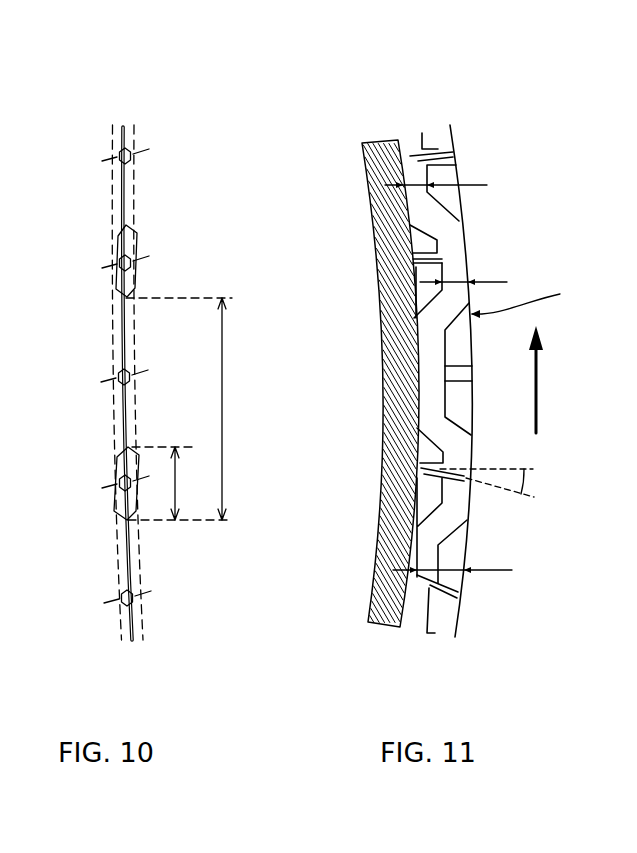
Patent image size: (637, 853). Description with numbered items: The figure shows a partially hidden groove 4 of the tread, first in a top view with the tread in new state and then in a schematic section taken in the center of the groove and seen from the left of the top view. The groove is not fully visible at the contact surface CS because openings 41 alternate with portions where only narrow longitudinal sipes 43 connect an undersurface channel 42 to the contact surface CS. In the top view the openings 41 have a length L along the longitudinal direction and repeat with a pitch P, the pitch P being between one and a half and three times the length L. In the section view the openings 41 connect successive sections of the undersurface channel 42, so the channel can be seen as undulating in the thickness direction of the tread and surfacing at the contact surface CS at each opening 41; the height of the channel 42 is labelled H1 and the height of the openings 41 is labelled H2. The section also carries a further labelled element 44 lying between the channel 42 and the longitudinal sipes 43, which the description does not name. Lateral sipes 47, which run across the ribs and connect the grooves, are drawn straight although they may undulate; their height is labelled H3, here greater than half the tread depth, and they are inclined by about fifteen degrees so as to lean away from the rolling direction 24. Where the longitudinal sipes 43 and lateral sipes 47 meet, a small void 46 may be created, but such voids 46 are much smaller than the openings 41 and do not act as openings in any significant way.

In FIG. 10, the partially hidden groove 4 is at (129, 90).
In FIG. 11, the rolling direction 24 is at (562, 383).
In FIG. 10, the opening 41 is at (112, 267).
In FIG. 11, the opening 41 is at (453, 246).
In FIG. 10, the undersurface channel 42 is at (110, 328).
In FIG. 11, the undersurface channel 42 is at (413, 169).
In FIG. 10, the longitudinal sipe 43 is at (131, 128).
In FIG. 11, the longitudinal sipe 43 is at (415, 226).
In FIG. 11, the connecting bar 44 is at (425, 238).
In FIG. 10, the small void 46 is at (119, 236).
In FIG. 11, the small void 46 is at (442, 148).
In FIG. 10, the lateral sipe 47 is at (134, 262).
In FIG. 11, the lateral sipe 47 is at (437, 368).
In FIG. 10, the repetition pitch P is at (183, 409).
In FIG. 10, the opening length L is at (164, 483).
In FIG. 11, the channel height H1 is at (440, 175).
In FIG. 11, the opening height H2 is at (465, 270).
In FIG. 11, the lateral sipe height H3 is at (455, 558).
In FIG. 11, the contact surface CS is at (530, 295).